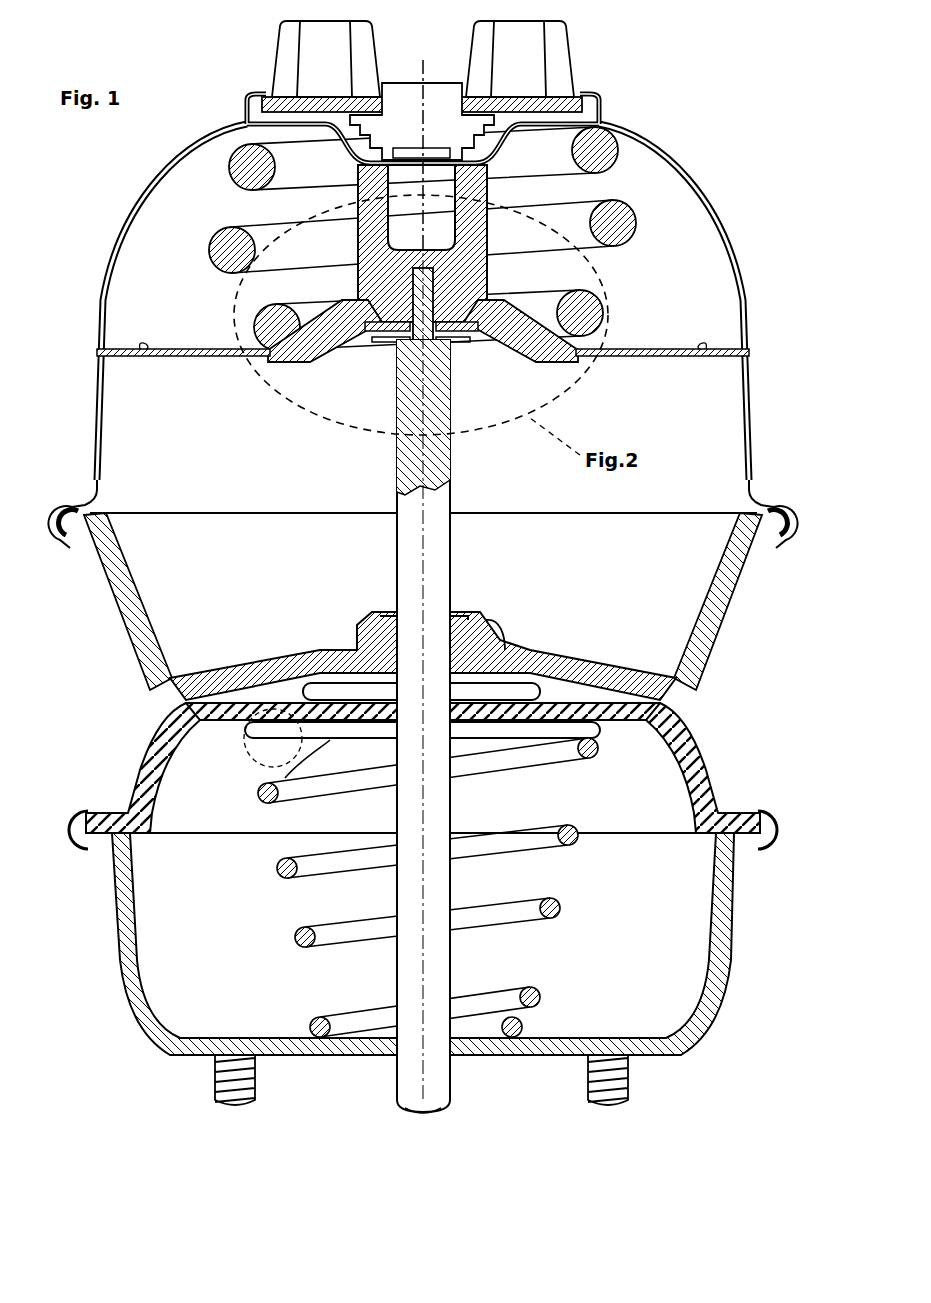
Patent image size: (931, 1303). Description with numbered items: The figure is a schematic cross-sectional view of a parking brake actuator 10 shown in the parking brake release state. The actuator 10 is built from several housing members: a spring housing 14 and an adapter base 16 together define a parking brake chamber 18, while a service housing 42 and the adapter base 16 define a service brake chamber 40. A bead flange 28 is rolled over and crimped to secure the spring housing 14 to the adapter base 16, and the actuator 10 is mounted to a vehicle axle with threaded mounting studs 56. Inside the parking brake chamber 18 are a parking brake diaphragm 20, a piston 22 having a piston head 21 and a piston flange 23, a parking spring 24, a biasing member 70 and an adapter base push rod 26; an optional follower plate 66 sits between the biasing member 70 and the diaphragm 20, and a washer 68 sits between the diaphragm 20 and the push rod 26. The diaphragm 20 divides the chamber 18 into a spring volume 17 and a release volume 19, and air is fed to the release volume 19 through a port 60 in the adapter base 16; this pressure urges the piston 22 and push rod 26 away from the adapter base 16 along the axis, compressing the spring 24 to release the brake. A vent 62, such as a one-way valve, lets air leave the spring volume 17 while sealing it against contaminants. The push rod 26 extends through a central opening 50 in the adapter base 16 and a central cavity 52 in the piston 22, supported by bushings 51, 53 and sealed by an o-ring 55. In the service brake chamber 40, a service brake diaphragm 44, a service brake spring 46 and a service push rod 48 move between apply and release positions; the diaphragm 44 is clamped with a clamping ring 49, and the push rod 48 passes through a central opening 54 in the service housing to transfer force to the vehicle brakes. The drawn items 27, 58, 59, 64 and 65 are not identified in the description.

The parking brake actuator 10 is at (108, 156).
The spring housing 14 is at (118, 242).
The adapter base 16 is at (110, 562).
The spring volume 17 is at (158, 225).
The parking brake chamber 18 is at (83, 398).
The release volume 19 is at (105, 442).
The parking brake diaphragm 20 is at (118, 348).
The piston head 21 is at (468, 243).
The piston 22 is at (490, 271).
The piston flange 23 is at (632, 352).
The parking spring 24 is at (615, 222).
The adapter base push rod 26 is at (445, 455).
The spring seat 27 is at (495, 180).
The bead flange 28 is at (782, 556).
The service brake chamber 40 is at (106, 901).
The service housing 42 is at (128, 958).
The service brake diaphragm 44 is at (680, 722).
The service brake spring 46 is at (545, 905).
The push rod 48 is at (440, 960).
The clamping ring 49 is at (762, 800).
The central opening 50 is at (455, 608).
The bushing 51 is at (392, 608).
The central cavity 52 is at (572, 305).
The bushing 53 is at (365, 640).
The central opening 54 is at (460, 1055).
The o-ring 55 is at (476, 612).
The threaded mounting studs 56 is at (245, 1072).
The piston plate hub 58 is at (300, 672).
The tubular member 59 is at (275, 775).
The port 60 is at (503, 637).
The vent 62 is at (412, 100).
The stud 64 is at (525, 46).
The reinforcing plate 65 is at (585, 100).
The follower plate 66 is at (345, 295).
The washer 68 is at (385, 345).
The biasing member 70 is at (460, 345).